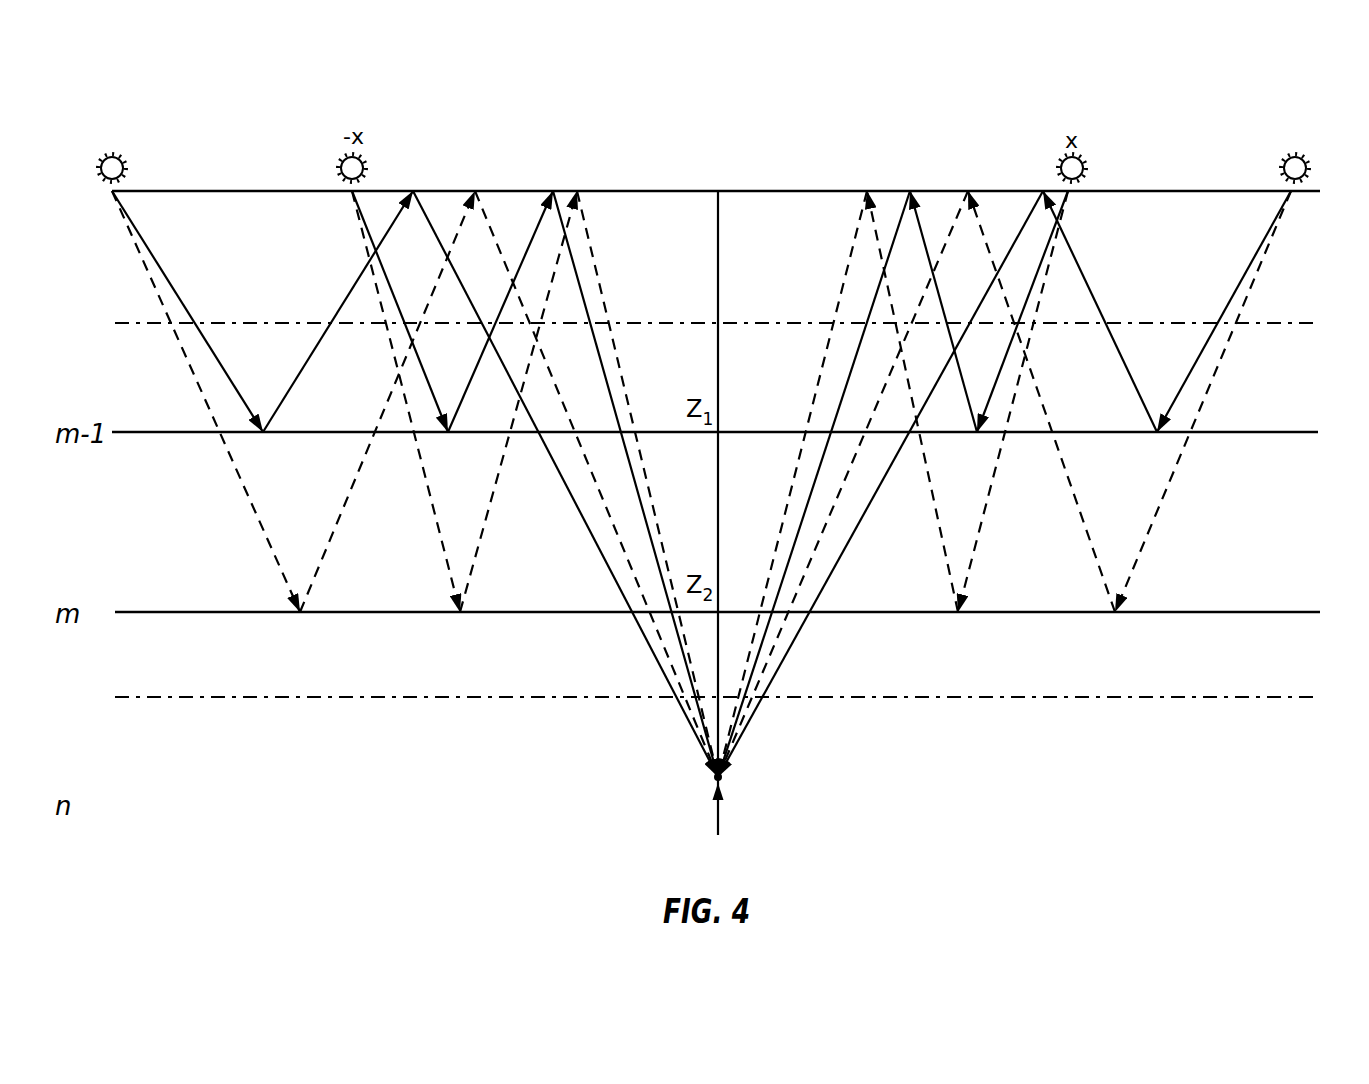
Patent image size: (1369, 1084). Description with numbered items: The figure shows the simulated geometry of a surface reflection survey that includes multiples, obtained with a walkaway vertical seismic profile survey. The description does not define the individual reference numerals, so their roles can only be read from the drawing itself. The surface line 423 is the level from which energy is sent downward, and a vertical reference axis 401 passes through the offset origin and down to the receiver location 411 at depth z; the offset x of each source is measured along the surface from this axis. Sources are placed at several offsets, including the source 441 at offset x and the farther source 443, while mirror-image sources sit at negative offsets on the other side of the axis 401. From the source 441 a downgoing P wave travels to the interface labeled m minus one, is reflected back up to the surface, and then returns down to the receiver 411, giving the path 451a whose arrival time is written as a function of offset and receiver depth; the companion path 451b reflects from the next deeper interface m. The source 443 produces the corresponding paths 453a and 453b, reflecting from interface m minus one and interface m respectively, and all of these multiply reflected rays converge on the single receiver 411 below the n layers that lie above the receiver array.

The vertical axis / optical axis 401 is at (718, 190).
The focal point / receiver 411 is at (733, 778).
The top surface / entrance plane 423 is at (648, 190).
The source at position x 441 is at (1085, 155).
The source at outer position 443 is at (1308, 155).
The ray from source 441 reflected at layer m-1 451a is at (988, 400).
The ray from source 441 reflected at layer m 451b is at (973, 550).
The ray from source 443 reflected at layer m-1 453a is at (1173, 402).
The ray from source 443 reflected at layer m 453b is at (1162, 492).